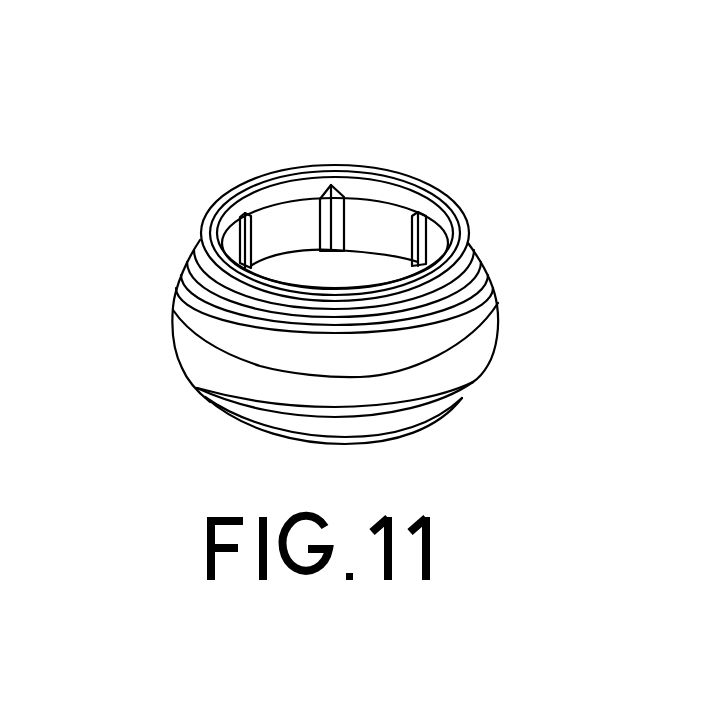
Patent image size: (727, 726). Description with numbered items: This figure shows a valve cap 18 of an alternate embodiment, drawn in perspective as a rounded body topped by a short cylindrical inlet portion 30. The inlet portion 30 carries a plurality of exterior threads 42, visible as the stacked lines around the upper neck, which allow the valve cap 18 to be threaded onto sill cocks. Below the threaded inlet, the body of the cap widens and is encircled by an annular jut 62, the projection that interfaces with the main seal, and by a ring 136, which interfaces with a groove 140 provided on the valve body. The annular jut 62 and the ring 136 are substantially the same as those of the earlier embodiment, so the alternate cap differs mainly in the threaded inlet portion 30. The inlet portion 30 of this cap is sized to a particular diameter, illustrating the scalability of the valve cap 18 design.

The valve cap 18 is at (347, 255).
The inlet portion 30 is at (382, 193).
The exterior threads 42 is at (478, 248).
The annular jut 62 is at (447, 410).
The ring 136 is at (470, 378).
The groove 140 is at (240, 396).